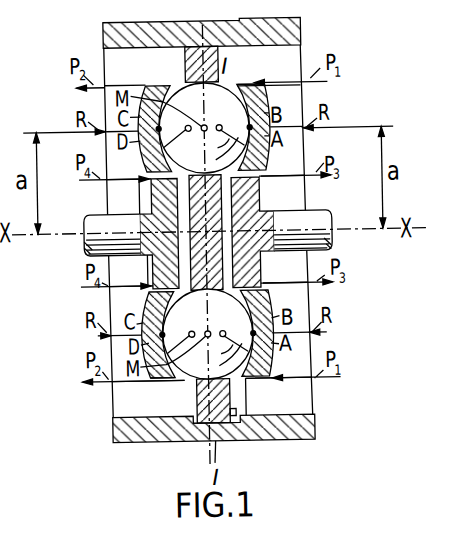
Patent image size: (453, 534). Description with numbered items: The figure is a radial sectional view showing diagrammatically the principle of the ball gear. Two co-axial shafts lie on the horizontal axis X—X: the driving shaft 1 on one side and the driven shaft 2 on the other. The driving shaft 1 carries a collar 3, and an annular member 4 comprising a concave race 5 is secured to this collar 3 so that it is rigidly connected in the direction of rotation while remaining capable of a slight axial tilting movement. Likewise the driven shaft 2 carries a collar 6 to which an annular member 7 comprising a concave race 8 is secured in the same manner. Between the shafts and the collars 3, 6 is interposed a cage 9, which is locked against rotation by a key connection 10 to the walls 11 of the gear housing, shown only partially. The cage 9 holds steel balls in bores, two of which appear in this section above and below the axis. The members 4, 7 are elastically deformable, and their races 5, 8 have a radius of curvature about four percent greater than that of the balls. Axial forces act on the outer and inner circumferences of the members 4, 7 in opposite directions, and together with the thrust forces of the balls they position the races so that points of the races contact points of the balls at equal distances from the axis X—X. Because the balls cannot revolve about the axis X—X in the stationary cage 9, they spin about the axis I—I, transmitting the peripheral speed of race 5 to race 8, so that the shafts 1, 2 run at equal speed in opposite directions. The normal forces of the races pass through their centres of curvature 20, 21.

The driving shaft 1 is at (311, 218).
The driven shaft 2 is at (98, 222).
The collar 3 is at (263, 199).
The annular member 4 is at (266, 96).
The concave race 5 is at (240, 86).
The collar 6 is at (160, 199).
The annular member 7 is at (160, 376).
The concave race 8 is at (178, 378).
The cage 9 is at (190, 60).
The key connection 10 is at (230, 414).
The walls 11 is at (305, 21).
The centre of curvature 20 is at (147, 166).
The centre of curvature 21 is at (267, 160).